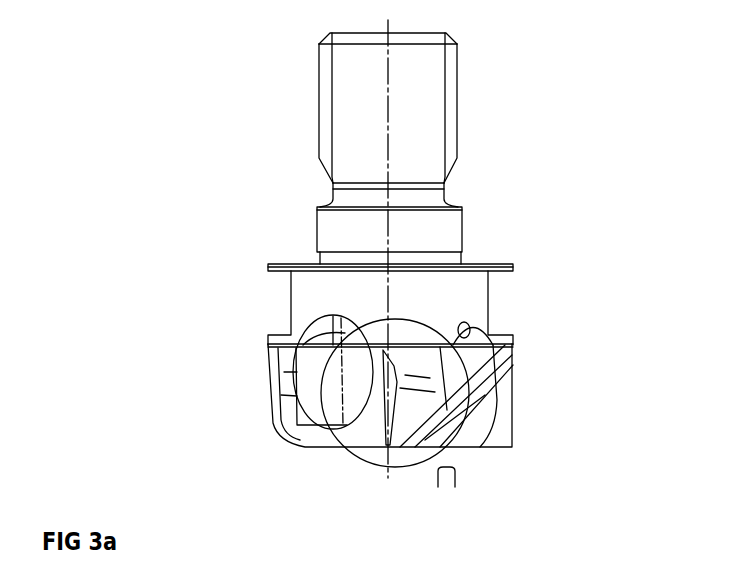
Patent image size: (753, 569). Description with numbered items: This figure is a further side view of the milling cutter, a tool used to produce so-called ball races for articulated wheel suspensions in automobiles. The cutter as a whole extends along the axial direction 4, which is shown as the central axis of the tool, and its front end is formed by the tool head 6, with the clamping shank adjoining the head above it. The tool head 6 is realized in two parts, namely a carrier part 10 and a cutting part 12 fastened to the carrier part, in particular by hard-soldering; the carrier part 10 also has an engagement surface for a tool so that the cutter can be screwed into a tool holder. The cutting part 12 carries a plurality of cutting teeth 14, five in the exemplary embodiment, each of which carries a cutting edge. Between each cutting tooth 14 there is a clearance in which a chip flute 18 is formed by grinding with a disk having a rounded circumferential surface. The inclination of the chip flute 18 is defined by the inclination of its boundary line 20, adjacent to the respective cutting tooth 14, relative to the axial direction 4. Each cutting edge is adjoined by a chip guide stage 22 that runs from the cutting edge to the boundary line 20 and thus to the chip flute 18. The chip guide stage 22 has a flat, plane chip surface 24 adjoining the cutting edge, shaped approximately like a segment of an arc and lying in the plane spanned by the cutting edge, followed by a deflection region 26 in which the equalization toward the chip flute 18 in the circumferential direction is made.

The axial direction 4 is at (388, 157).
The tool head 6 is at (587, 448).
The carrier part 10 is at (307, 278).
The cutting part 12 is at (287, 370).
The cutting tooth 14 is at (397, 420).
The chip flute 18 is at (347, 372).
The boundary line 20 is at (483, 392).
The chip guide stage 22 is at (486, 409).
The chip surface 24 is at (495, 438).
The deflection region 26 is at (507, 358).